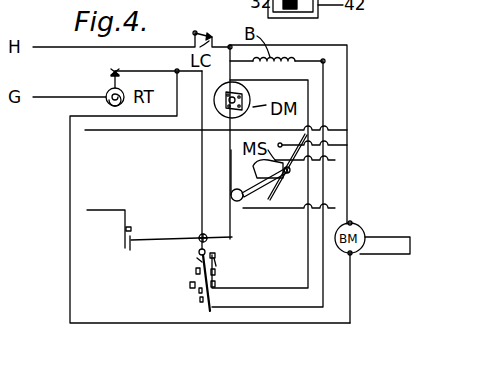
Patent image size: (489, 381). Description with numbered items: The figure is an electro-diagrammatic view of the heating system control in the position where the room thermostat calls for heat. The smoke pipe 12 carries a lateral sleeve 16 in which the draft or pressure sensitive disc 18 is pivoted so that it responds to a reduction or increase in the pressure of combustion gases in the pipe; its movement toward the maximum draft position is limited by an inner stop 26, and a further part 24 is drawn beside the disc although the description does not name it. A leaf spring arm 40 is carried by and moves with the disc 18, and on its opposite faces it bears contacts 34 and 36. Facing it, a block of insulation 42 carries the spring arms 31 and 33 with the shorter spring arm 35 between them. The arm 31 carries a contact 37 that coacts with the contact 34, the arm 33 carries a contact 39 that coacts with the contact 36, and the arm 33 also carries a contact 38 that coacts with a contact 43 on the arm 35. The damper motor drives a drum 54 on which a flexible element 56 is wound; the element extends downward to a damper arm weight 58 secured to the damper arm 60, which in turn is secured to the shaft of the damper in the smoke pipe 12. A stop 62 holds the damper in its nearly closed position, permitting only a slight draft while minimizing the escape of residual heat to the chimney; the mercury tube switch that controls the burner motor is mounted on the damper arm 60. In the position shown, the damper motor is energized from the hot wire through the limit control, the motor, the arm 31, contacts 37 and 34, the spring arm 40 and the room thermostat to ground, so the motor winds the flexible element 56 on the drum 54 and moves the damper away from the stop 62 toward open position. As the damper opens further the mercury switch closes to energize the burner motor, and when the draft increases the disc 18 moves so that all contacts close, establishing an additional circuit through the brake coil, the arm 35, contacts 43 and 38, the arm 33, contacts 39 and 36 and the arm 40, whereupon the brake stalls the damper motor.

The smoke pipe 12 is at (128, 133).
The lateral sleeve 16 is at (124, 213).
The draft or pressure sensitive disc 18 is at (181, 236).
The contact 24 is at (128, 249).
The inner stop 26 is at (133, 228).
The spring arm 31 is at (215, 284).
The spring arm 33 is at (190, 280).
The contact 34 is at (215, 272).
The shorter spring arm 35 is at (198, 290).
The contact 36 is at (199, 251).
The contact 37 is at (216, 260).
The contact 38 is at (196, 279).
The contact 39 is at (195, 258).
The leaf spring arm 40 is at (215, 254).
The block of insulation 42 is at (202, 299).
The contact 43 is at (211, 312).
The drum 54 is at (243, 95).
The flexible element 56 is at (230, 150).
The damper arm weight 58 is at (231, 197).
The damper arm 60 is at (257, 180).
The stop 62 is at (276, 192).